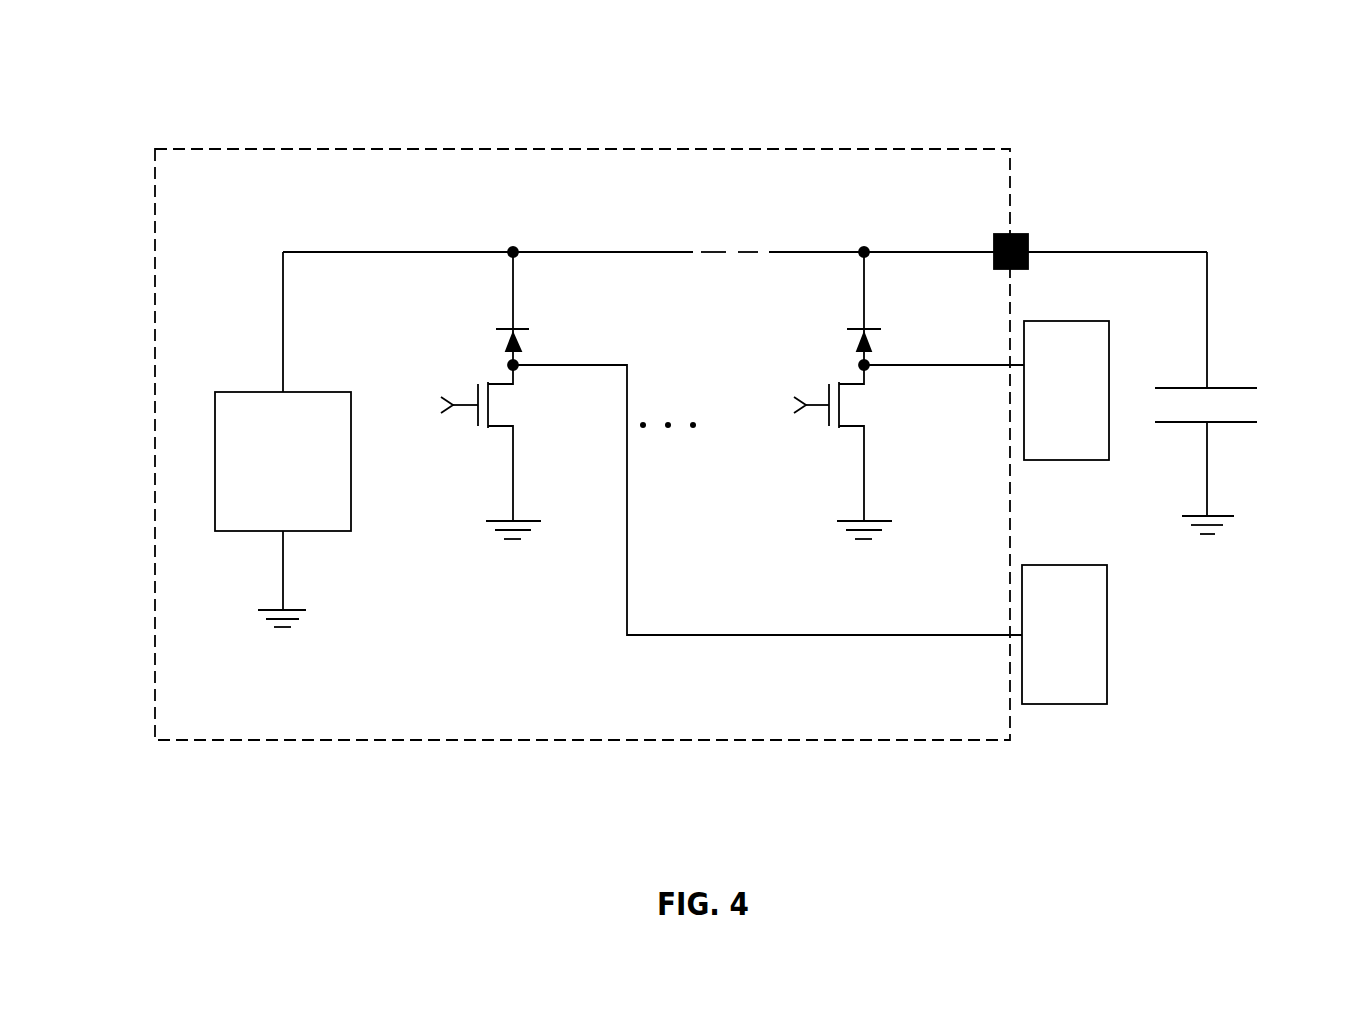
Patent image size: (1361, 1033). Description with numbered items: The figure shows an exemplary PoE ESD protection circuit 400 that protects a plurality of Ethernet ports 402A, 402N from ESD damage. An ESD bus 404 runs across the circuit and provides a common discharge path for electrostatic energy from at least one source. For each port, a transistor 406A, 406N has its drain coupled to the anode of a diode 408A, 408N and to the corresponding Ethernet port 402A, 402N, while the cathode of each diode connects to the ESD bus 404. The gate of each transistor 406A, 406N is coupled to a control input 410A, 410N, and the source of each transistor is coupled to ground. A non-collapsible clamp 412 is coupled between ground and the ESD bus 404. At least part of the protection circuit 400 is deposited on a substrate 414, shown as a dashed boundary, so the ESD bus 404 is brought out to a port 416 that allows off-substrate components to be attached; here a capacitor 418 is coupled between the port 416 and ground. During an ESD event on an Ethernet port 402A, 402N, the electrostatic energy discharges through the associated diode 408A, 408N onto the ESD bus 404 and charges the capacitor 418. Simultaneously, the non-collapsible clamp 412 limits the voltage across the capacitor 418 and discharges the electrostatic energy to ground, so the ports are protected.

The PoE ESD protection circuit 400 is at (1287, 110).
The Ethernet port 402A is at (1068, 458).
The Ethernet port 402N is at (1068, 702).
The ESD bus 404 is at (632, 249).
The transistor 406A is at (864, 399).
The transistor 406N is at (513, 399).
The diode 408A is at (868, 338).
The diode 408N is at (518, 338).
The control input 410A is at (797, 405).
The control input 410N is at (444, 405).
The non-collapsible clamp 412 is at (258, 389).
The substrate 414 is at (888, 147).
The port 416 is at (1012, 232).
The capacitor 418 is at (1258, 405).